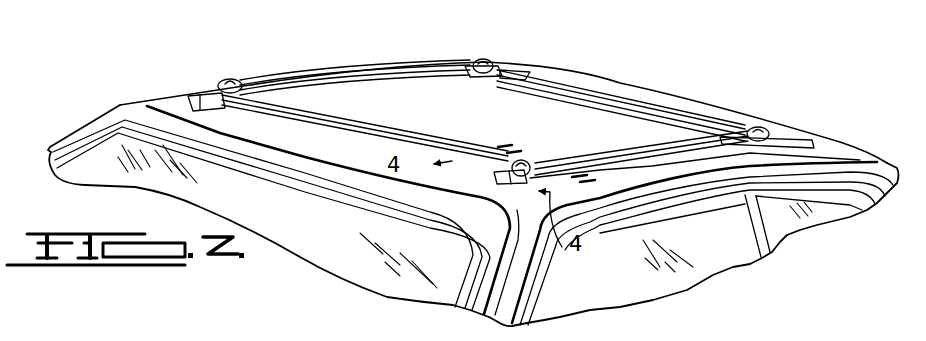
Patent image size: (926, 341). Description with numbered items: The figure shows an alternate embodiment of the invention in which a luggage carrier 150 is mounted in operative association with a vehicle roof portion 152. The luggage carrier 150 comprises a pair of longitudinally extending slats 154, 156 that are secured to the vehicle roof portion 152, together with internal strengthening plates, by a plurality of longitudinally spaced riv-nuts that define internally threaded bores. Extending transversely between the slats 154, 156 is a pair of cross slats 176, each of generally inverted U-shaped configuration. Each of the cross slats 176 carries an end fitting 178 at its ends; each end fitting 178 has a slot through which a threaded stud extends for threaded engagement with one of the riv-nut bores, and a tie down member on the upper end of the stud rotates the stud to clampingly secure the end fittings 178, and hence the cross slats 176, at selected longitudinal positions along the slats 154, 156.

The luggage carrier 150 is at (646, 104).
The vehicle roof portion 152 is at (828, 150).
The slat 154 is at (652, 168).
The slat 156 is at (326, 72).
The cross slat 176 is at (403, 116).
The end fitting 178 is at (222, 90).